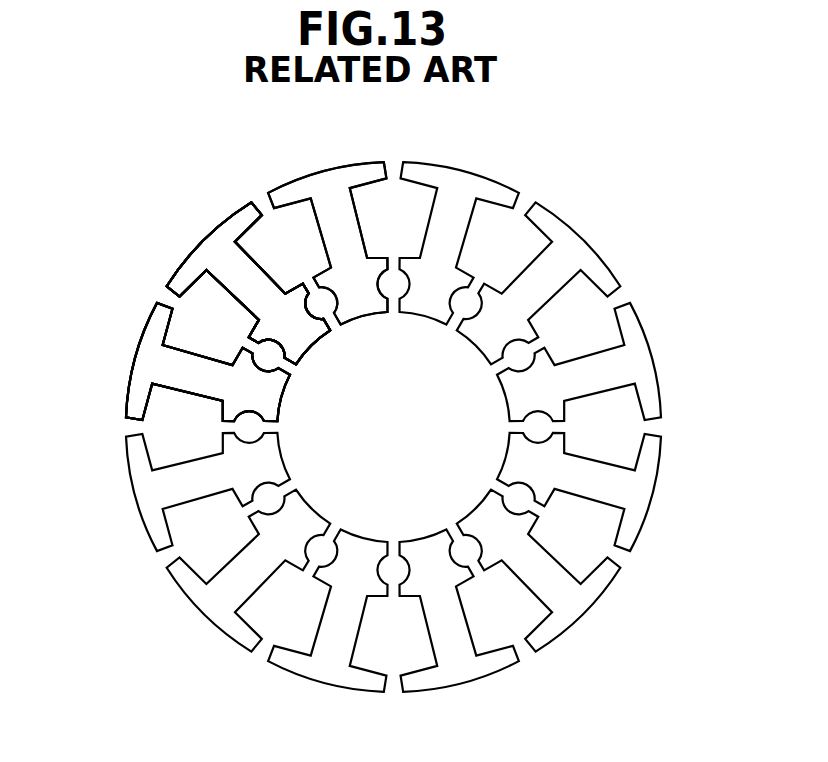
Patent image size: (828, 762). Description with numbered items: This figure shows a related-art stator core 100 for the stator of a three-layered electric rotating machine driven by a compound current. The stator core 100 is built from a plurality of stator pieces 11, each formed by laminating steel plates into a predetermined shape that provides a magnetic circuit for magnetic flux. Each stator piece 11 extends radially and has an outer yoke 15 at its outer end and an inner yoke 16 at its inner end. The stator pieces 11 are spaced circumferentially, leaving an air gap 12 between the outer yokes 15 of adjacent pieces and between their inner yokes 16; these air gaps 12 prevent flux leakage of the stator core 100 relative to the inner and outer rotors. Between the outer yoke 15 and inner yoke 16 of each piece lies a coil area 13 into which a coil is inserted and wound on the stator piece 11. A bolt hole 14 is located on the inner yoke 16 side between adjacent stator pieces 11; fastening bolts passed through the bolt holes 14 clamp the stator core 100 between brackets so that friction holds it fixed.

The stator core 100 is at (558, 177).
The stator piece 11 is at (227, 265).
The air gap 12 is at (308, 278).
The coil area 13 is at (200, 317).
The bolt hole 14 is at (260, 362).
The outer yoke 15 is at (237, 220).
The inner yoke 16 is at (305, 350).